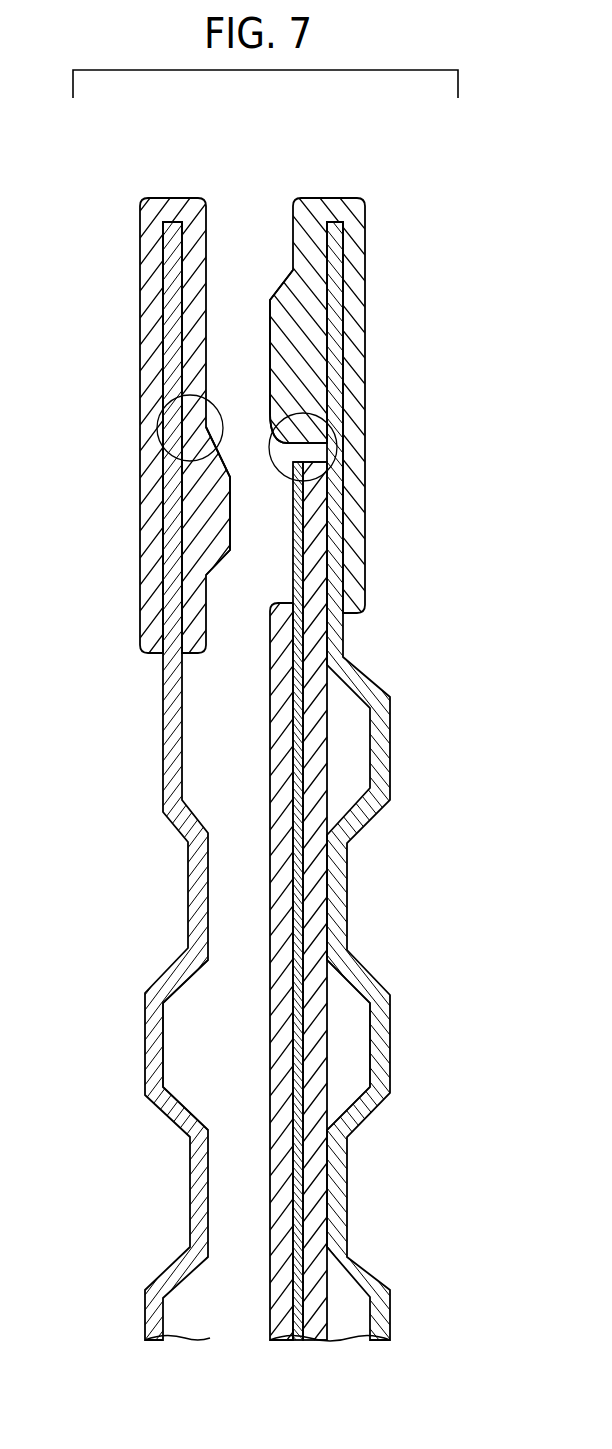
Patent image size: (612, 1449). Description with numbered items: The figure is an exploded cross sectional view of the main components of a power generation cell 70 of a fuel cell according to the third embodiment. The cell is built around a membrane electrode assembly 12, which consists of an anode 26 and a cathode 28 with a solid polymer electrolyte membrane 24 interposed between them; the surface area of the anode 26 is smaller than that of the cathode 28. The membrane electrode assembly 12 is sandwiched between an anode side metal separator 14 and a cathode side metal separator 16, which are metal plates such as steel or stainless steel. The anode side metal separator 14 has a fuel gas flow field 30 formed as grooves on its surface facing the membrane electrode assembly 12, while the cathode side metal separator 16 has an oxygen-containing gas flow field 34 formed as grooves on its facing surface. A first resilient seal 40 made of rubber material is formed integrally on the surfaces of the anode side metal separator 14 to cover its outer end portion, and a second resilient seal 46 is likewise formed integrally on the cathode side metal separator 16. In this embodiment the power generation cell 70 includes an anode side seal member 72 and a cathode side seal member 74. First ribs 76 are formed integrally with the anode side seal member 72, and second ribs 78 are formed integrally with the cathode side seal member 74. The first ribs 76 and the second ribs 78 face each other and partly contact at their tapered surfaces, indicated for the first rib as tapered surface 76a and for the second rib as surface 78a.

The membrane electrode assembly 12 is at (382, 901).
The anode side metal separator 14 is at (154, 744).
The cathode side metal separator 16 is at (382, 744).
The solid polymer electrolyte membrane 24 is at (303, 775).
The anode 26 is at (282, 807).
The cathode 28 is at (320, 723).
The fuel gas flow field 30 is at (191, 1045).
The oxygen-containing gas flow field 34 is at (349, 1045).
The first resilient seal 40 is at (140, 210).
The second resilient seal 46 is at (360, 216).
The power generation cell 70 is at (283, 152).
The anode side seal member 72 is at (212, 524).
The cathode side seal member 74 is at (278, 333).
The first ribs 76 is at (210, 460).
The tapered surface 76a is at (207, 397).
The second ribs 78 is at (282, 424).
The inclined surface of recess 78a is at (303, 490).